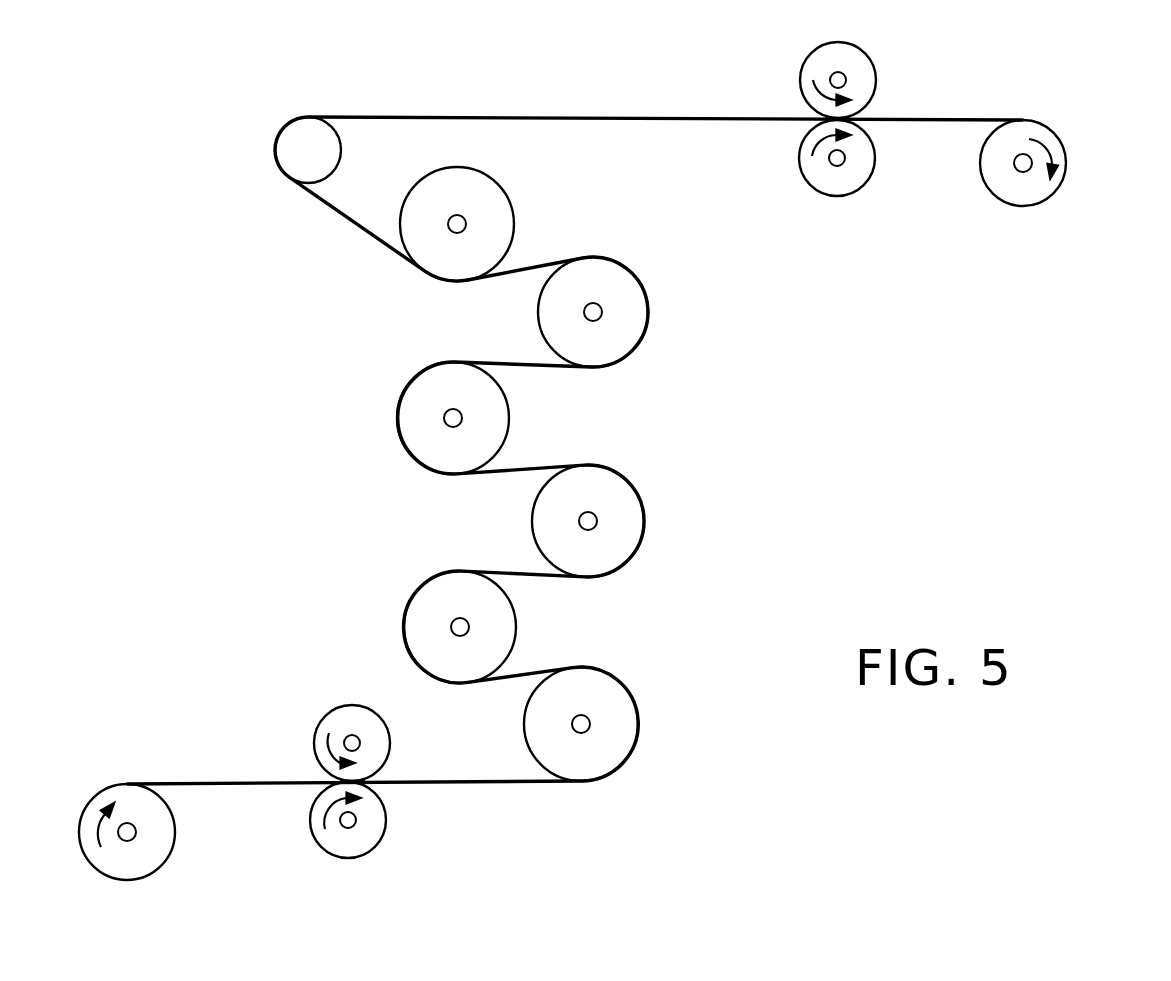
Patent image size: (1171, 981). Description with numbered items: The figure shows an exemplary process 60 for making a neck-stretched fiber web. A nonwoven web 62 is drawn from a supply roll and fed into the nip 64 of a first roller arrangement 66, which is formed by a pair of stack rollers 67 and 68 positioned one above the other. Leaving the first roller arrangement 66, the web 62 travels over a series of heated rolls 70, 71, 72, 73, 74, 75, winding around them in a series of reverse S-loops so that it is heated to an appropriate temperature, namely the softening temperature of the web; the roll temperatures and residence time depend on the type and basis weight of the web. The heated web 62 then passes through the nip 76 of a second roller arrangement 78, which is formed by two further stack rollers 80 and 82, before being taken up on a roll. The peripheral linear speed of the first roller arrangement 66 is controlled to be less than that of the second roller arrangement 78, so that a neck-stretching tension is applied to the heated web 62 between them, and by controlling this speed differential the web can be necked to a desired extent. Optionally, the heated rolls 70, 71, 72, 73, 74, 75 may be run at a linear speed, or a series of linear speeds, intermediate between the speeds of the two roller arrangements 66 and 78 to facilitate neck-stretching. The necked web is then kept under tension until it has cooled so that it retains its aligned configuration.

The process 60 is at (1040, 449).
The nonwoven web 62 is at (204, 766).
The nip 64 is at (293, 796).
The first roller arrangement 66 is at (292, 640).
The stack roller 67 is at (358, 702).
The stack roller 68 is at (378, 851).
The heated roll 70 is at (614, 750).
The heated roll 71 is at (421, 615).
The heated roll 72 is at (622, 536).
The heated roll 73 is at (412, 434).
The heated roll 74 is at (623, 325).
The heated roll 75 is at (494, 228).
The nip 76 is at (780, 133).
The second roller arrangement 78 is at (797, 37).
The stack roller 80 is at (858, 165).
The stack roller 82 is at (860, 67).